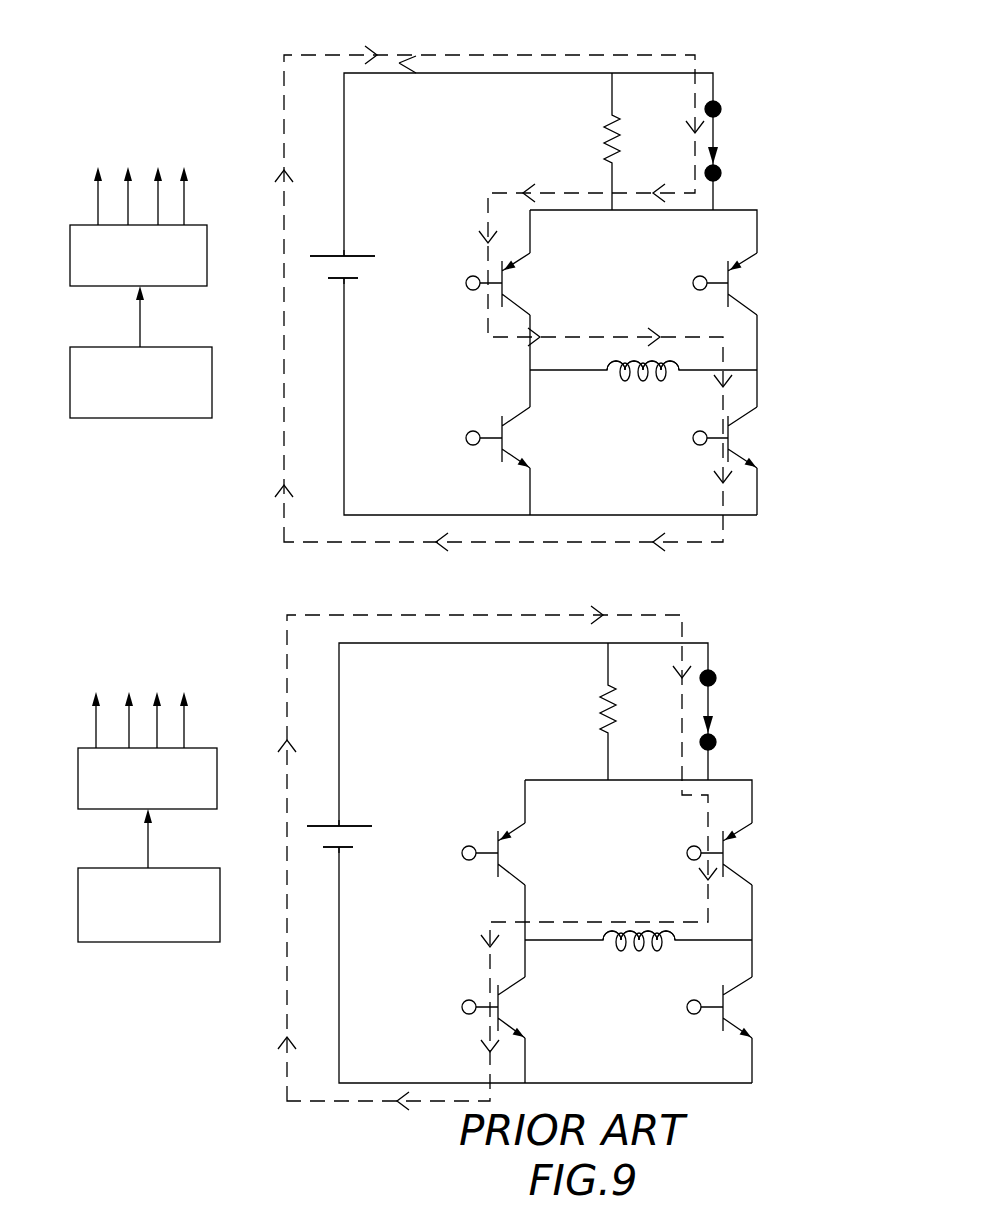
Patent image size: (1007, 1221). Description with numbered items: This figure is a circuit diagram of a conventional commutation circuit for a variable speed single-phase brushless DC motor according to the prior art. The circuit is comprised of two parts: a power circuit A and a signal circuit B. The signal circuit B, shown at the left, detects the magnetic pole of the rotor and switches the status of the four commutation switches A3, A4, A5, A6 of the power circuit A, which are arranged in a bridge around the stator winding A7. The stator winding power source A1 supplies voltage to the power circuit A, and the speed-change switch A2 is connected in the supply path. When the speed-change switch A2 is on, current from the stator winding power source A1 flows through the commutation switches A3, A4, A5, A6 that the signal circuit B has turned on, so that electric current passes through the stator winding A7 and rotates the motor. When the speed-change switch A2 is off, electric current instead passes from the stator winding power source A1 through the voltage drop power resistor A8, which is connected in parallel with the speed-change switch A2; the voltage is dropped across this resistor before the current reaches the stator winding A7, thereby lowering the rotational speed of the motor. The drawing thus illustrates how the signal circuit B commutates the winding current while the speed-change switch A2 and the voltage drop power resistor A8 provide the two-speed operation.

The power circuit A is at (836, 110).
The signal circuit B is at (150, 88).
The stator winding power source A1 is at (363, 268).
The speed-change switch A2 is at (721, 173).
The commutation switch A3 is at (466, 283).
The commutation switch A4 is at (693, 283).
The commutation switch A5 is at (466, 438).
The commutation switch A6 is at (693, 438).
The stator winding A7 is at (640, 381).
The voltage drop power resistor A8 is at (616, 135).